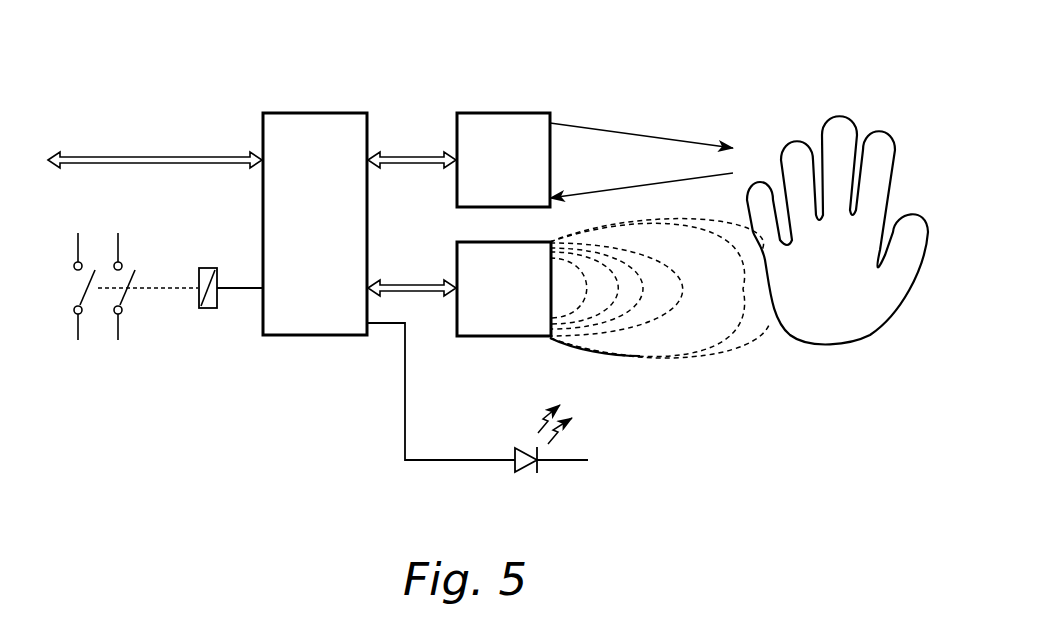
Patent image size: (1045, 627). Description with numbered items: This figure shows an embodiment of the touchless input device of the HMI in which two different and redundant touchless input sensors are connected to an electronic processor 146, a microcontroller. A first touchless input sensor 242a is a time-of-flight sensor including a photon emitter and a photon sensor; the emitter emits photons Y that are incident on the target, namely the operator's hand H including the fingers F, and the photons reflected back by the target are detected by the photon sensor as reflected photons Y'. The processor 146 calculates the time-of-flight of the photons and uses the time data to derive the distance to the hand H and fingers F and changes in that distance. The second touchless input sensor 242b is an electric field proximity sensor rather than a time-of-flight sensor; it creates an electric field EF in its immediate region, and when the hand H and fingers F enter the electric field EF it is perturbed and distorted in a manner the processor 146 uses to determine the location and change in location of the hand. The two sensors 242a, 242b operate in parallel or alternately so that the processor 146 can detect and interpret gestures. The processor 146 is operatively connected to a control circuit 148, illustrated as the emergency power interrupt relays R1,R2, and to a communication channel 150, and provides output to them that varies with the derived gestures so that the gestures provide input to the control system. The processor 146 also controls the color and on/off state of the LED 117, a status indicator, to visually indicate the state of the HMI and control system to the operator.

The communication channel 150 is at (207, 160).
The electronic processor 146 is at (328, 113).
The first touchless input sensor 242a is at (515, 113).
The second touchless input sensor 242b is at (515, 337).
The control circuit 148 is at (190, 329).
The LED 117 is at (509, 441).
The emergency power interrupt relays R1,R2 is at (142, 249).
The photons Y is at (641, 124).
The reflected photons Y' is at (641, 174).
The electric field EF is at (731, 340).
The fingers F is at (843, 141).
The hand H is at (837, 252).